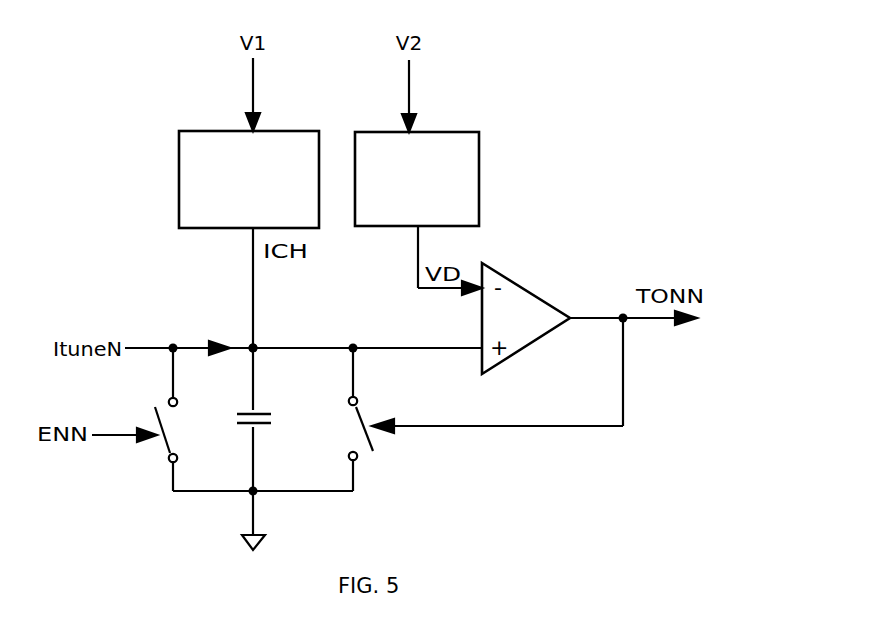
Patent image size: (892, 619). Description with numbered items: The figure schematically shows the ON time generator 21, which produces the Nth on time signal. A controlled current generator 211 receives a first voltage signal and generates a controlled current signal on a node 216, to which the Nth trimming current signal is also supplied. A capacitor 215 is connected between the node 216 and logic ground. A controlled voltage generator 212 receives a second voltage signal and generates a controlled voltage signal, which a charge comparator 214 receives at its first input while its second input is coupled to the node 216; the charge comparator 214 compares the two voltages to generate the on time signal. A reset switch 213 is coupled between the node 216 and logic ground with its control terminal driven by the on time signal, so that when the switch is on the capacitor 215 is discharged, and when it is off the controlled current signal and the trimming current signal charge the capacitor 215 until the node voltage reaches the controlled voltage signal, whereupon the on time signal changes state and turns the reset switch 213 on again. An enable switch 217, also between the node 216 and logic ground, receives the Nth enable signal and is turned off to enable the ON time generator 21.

The ON time generator 21 is at (595, 137).
The controlled current generator 211 is at (272, 130).
The controlled voltage generator 212 is at (479, 147).
The reset switch 213 is at (367, 420).
The charge comparator 214 is at (516, 284).
The capacitor 215 is at (280, 417).
The node 216 is at (258, 345).
The enable switch 217 is at (158, 452).